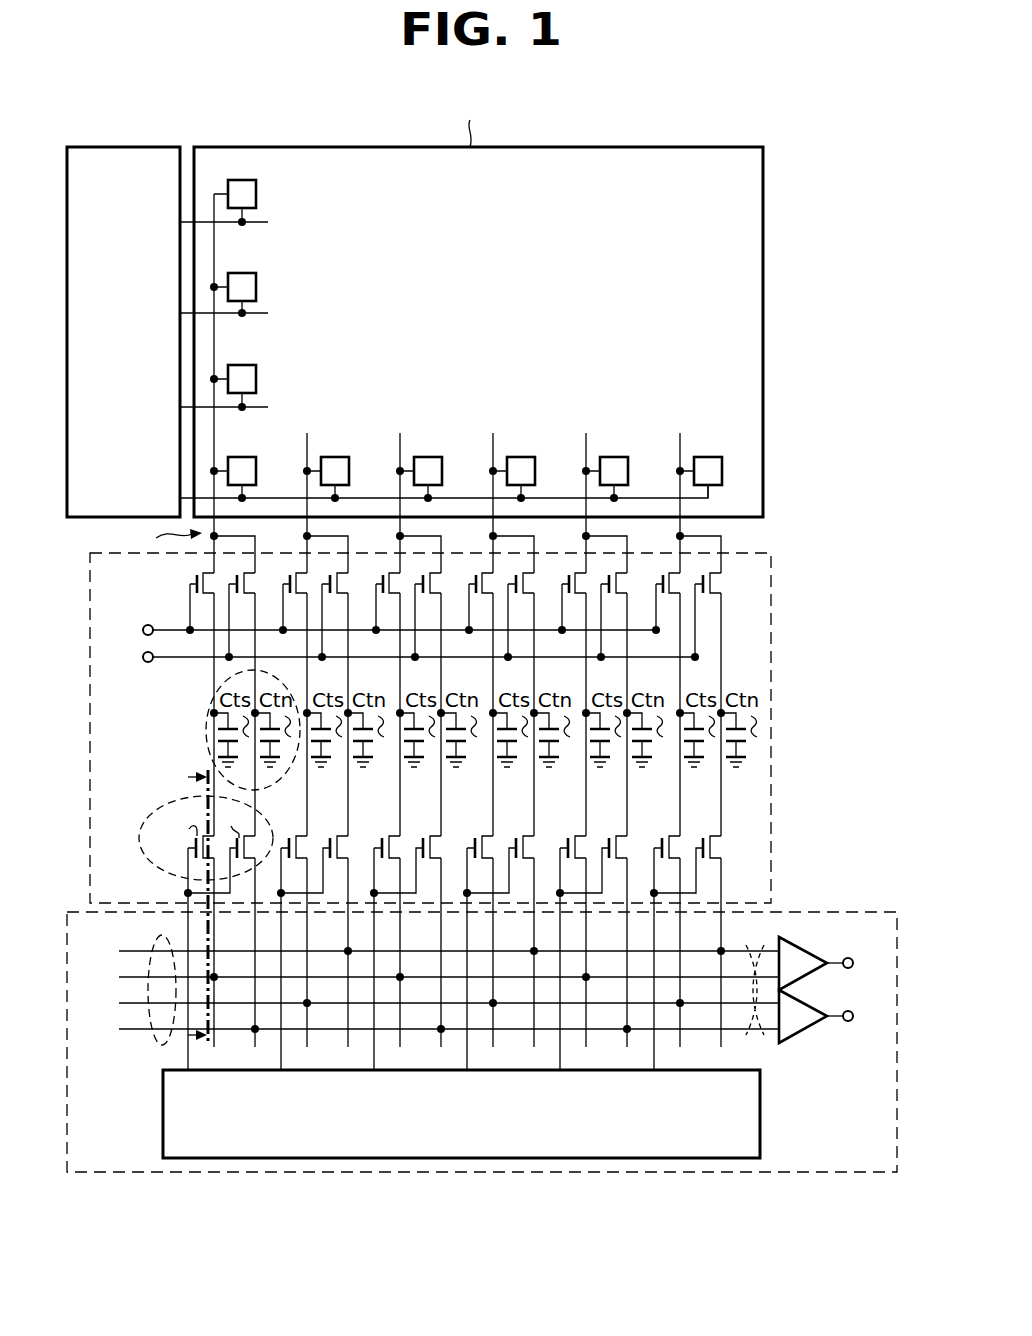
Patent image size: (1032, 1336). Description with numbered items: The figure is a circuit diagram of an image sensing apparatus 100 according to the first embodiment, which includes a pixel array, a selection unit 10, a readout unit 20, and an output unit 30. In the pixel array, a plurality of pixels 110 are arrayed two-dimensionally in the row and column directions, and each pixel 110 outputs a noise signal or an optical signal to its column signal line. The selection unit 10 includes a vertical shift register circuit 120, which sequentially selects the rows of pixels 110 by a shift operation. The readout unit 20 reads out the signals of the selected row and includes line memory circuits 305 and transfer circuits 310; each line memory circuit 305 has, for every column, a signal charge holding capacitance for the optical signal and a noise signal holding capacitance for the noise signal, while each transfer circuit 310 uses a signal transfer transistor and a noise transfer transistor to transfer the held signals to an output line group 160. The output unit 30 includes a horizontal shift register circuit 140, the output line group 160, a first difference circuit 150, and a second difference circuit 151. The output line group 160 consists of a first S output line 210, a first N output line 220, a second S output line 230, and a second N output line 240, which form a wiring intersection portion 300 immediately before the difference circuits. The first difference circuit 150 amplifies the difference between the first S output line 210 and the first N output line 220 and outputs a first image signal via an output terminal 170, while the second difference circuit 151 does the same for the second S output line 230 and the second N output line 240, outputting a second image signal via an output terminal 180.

The selection unit 10 is at (128, 122).
The vertical shift register circuit 120 is at (137, 147).
The pixel 110 is at (258, 194).
The readout unit 20 is at (773, 595).
The line memory circuit 305 is at (207, 724).
The transfer circuit 310 is at (170, 797).
The wiring intersection portion 300 is at (755, 945).
The first difference circuit 150 is at (808, 956).
The second difference circuit 151 is at (810, 1028).
The output terminal 170 is at (853, 963).
The output terminal 180 is at (850, 1022).
The second N output line 240 is at (142, 952).
The first S output line 210 is at (142, 978).
The second S output line 230 is at (142, 1004).
The first N output line 220 is at (142, 1030).
The output line group 160 is at (152, 1044).
The horizontal shift register circuit 140 is at (762, 1115).
The output unit 30 is at (853, 1172).
The image sensing apparatus 100 is at (110, 1190).